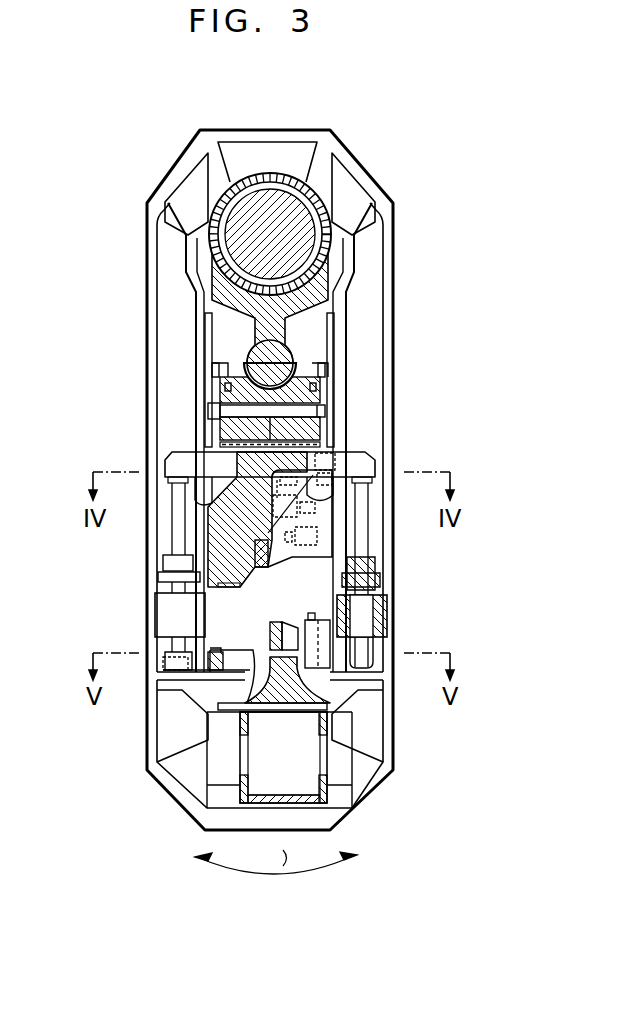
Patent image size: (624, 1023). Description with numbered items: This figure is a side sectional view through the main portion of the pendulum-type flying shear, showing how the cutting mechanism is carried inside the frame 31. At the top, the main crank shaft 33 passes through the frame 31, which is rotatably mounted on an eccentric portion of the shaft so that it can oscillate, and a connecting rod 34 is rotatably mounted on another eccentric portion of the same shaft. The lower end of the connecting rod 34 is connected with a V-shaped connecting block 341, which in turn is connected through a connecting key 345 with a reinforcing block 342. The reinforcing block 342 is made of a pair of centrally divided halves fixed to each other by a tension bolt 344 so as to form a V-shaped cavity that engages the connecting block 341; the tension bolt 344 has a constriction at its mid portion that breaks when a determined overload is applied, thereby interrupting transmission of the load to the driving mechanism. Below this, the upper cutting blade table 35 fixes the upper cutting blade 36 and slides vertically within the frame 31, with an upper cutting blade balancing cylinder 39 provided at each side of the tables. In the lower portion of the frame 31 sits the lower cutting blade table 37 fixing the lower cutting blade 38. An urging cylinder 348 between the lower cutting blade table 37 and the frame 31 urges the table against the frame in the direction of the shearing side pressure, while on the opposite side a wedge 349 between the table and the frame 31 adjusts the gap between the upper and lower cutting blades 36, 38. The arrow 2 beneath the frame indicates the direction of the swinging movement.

The swing direction arrow 2 is at (276, 858).
The frame 31 is at (376, 216).
The main crank shaft 33 is at (293, 217).
The connecting rod 34 is at (272, 328).
The V-shaped connecting block 341 is at (225, 370).
The reinforcing block 342 is at (310, 433).
The tension bolt 344 is at (228, 400).
The connecting key 345 is at (308, 388).
The upper cutting blade table 35 is at (220, 520).
The upper cutting blade 36 is at (268, 567).
The lower cutting blade table 37 is at (330, 700).
The lower cutting blade 38 is at (275, 620).
The upper cutting blade balancing cylinder 39 is at (165, 612).
The urging cylinder 348 is at (207, 653).
The wedge 349 is at (323, 662).